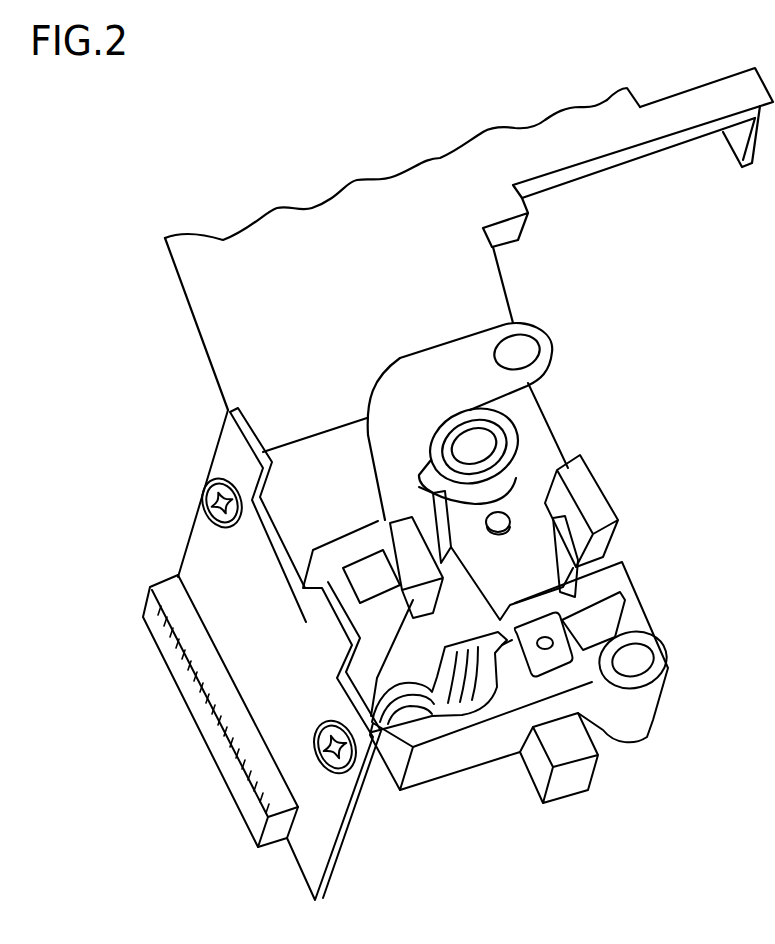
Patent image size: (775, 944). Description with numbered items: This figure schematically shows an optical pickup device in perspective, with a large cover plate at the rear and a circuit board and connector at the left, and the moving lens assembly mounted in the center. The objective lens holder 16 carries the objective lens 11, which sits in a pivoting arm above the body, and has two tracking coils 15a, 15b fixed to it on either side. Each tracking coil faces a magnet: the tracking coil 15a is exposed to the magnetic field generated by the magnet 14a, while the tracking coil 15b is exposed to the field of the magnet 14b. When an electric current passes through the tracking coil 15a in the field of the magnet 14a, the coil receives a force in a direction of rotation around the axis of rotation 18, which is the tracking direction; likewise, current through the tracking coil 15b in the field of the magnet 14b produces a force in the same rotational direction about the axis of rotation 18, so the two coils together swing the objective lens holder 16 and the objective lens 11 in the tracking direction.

The objective lens 11 is at (497, 424).
The objective lens holder 16 is at (515, 485).
The axis of rotation 18 is at (505, 512).
The magnet 14a is at (583, 493).
The magnet 14b is at (406, 612).
The tracking coil 15a is at (575, 578).
The tracking coil 15b is at (438, 513).